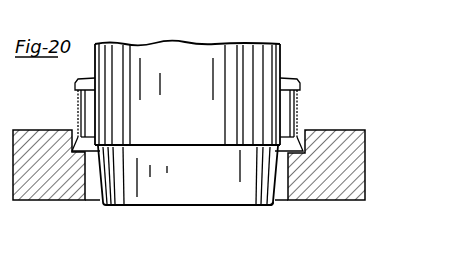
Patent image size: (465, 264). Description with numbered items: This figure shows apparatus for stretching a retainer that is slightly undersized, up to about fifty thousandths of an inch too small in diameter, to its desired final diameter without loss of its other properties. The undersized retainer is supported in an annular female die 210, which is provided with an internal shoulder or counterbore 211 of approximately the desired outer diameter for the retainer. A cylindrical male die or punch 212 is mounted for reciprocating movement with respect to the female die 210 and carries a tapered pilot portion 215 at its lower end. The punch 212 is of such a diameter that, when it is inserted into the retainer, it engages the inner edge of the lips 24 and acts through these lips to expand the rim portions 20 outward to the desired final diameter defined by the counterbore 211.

The rim portions 20 is at (78, 82).
The lips 24 is at (85, 117).
The annular female die 210 is at (63, 201).
The internal shoulder or counterbore 211 is at (303, 130).
The cylindrical male die or punch 212 is at (200, 50).
The tapered pilot portion 215 is at (278, 198).